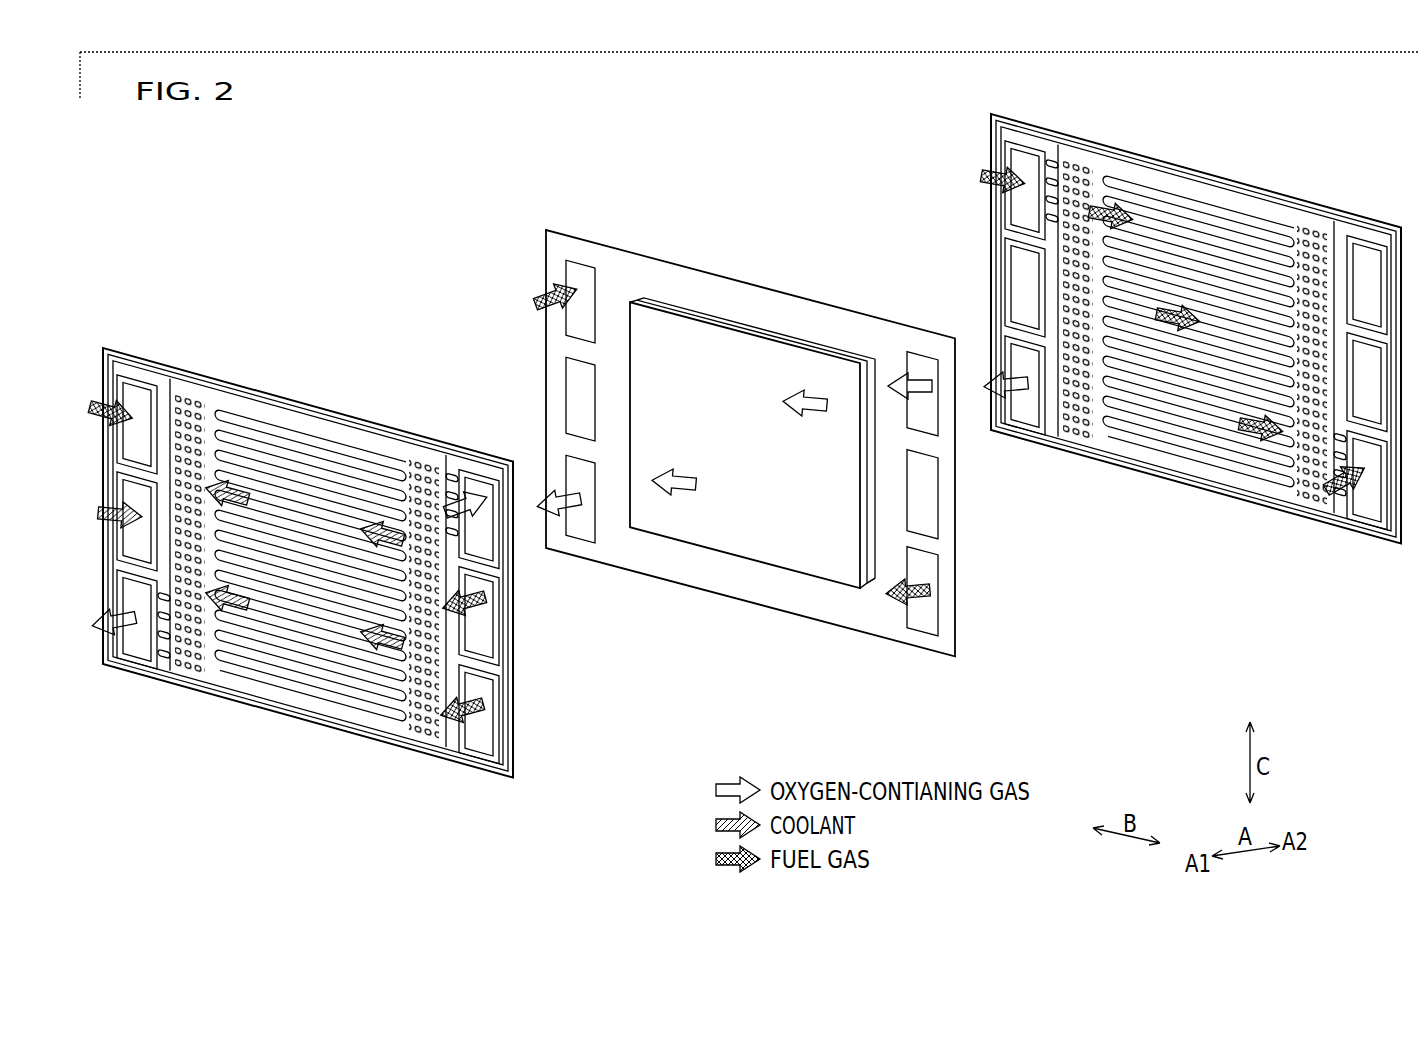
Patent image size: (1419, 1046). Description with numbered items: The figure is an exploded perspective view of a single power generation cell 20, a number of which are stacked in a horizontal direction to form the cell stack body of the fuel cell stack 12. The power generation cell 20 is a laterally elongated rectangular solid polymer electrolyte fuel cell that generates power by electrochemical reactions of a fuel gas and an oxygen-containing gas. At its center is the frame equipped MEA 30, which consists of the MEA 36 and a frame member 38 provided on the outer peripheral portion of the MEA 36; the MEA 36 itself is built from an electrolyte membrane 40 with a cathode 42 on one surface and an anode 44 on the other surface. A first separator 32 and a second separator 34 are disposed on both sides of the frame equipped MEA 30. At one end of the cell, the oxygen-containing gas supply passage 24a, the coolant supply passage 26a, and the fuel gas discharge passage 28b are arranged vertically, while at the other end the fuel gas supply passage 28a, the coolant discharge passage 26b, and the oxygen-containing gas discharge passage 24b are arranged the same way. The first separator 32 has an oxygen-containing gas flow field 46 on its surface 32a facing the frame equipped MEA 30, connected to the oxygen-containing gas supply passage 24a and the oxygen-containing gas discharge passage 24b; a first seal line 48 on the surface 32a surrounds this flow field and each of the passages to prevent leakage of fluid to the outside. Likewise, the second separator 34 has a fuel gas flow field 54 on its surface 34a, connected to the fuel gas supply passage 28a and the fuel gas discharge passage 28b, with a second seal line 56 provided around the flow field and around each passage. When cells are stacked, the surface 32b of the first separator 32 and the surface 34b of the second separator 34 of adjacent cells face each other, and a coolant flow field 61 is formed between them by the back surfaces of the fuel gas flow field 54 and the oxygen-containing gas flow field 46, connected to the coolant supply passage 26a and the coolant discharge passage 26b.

The power generation cell 20 is at (378, 141).
The fuel cell stack 12 is at (745, 456).
The first separator 32 is at (106, 342).
The surface 32a is at (405, 737).
The surface 32b is at (378, 727).
The second separator 34 is at (987, 106).
The surface 34a is at (1117, 448).
The surface 34b is at (1148, 456).
The frame equipped MEA 30 is at (721, 452).
The electrolyte membrane 40 is at (752, 502).
The cathode 42 is at (737, 559).
The frame member 38 is at (765, 596).
The MEA 36 is at (834, 598).
The anode 44 is at (875, 580).
The oxygen-containing gas flow field 46 is at (292, 452).
The first seal line 48 is at (150, 398).
The fuel gas flow field 54 is at (1155, 192).
The second seal line 56 is at (1113, 162).
The coolant flow field 61 is at (262, 435).
The oxygen-containing gas supply passage 24a is at (478, 482).
The oxygen-containing gas discharge passage 24b is at (137, 640).
The coolant supply passage 26a is at (482, 633).
The coolant discharge passage 26b is at (152, 543).
The fuel gas supply passage 28a is at (160, 400).
The fuel gas discharge passage 28b is at (482, 733).